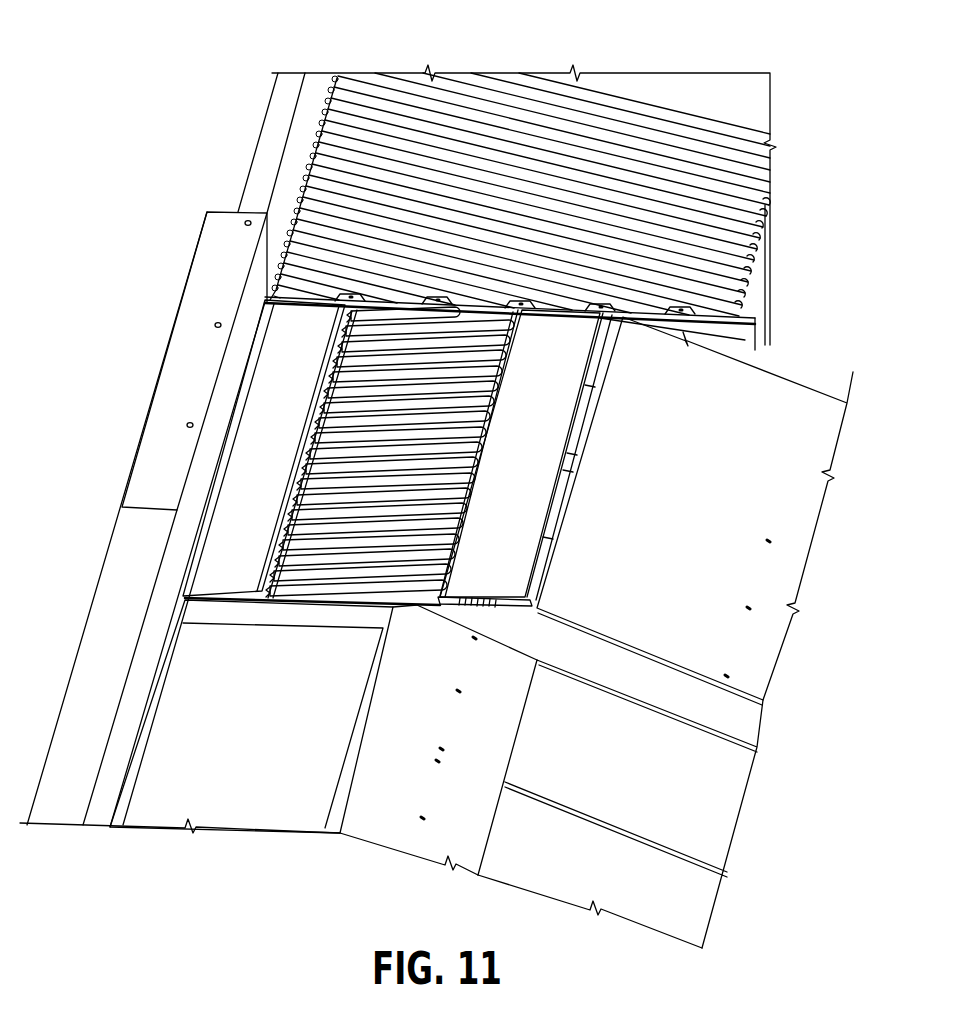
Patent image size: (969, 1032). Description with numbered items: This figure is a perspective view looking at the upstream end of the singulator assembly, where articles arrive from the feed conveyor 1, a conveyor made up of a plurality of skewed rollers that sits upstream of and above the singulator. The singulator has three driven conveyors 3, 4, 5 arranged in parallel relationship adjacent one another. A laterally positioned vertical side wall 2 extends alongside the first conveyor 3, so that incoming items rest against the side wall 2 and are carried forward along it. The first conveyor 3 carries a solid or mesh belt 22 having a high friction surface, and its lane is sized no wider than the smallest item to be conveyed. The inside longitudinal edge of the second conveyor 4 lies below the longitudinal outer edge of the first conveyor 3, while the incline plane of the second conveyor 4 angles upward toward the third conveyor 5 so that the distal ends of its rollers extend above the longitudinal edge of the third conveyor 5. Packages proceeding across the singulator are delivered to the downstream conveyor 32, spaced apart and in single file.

The feed conveyor 1 is at (651, 106).
The vertical side wall 2 is at (250, 298).
The first conveyor 3 is at (210, 492).
The second conveyor 4 is at (348, 603).
The third conveyor 5 is at (529, 467).
The belt 22 is at (248, 553).
The downstream conveyor 32 is at (270, 733).